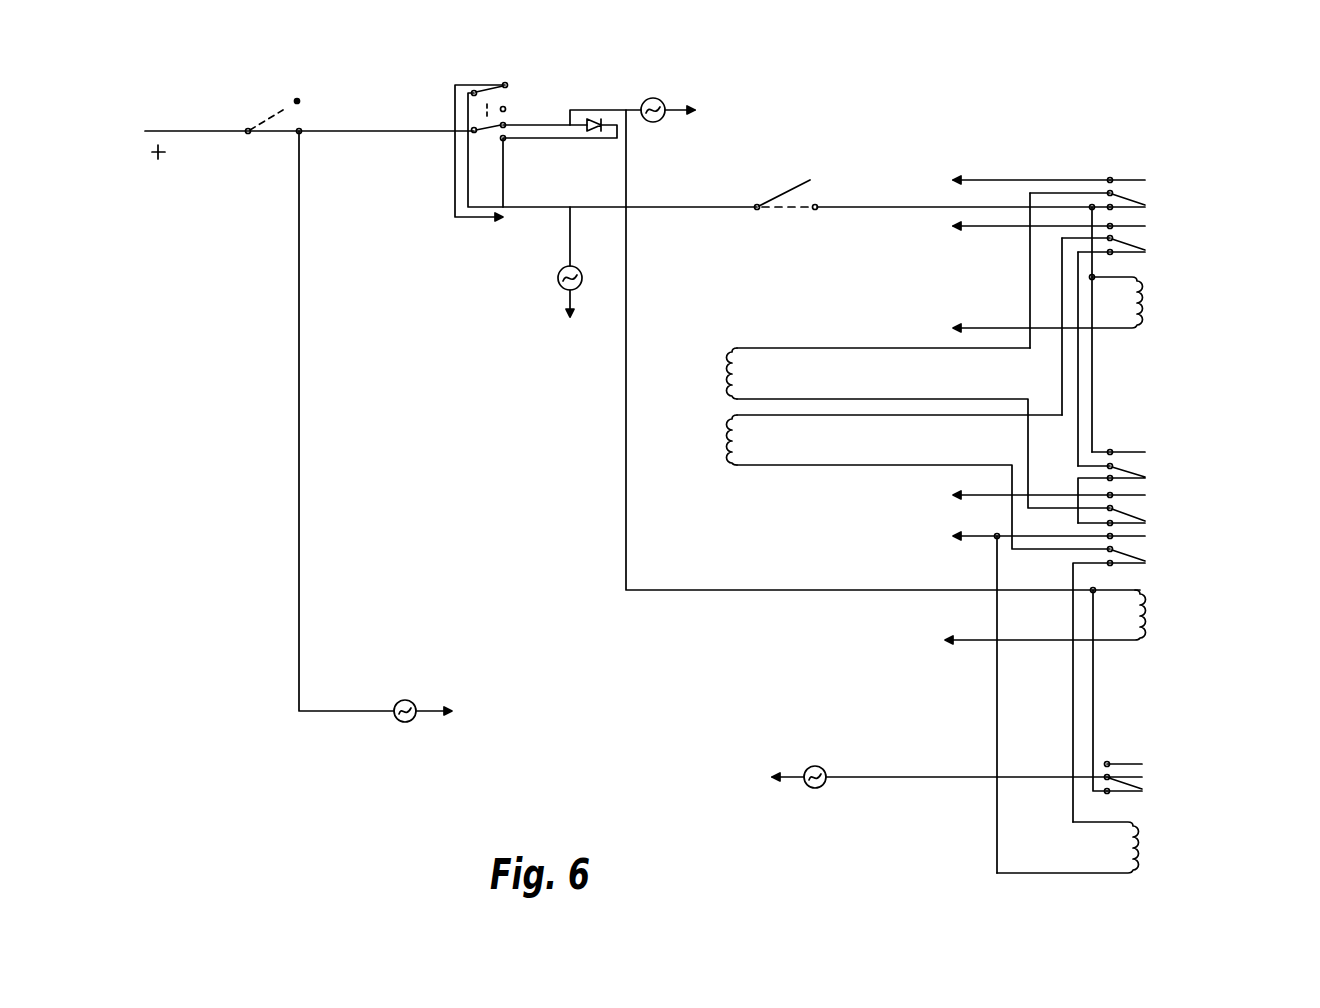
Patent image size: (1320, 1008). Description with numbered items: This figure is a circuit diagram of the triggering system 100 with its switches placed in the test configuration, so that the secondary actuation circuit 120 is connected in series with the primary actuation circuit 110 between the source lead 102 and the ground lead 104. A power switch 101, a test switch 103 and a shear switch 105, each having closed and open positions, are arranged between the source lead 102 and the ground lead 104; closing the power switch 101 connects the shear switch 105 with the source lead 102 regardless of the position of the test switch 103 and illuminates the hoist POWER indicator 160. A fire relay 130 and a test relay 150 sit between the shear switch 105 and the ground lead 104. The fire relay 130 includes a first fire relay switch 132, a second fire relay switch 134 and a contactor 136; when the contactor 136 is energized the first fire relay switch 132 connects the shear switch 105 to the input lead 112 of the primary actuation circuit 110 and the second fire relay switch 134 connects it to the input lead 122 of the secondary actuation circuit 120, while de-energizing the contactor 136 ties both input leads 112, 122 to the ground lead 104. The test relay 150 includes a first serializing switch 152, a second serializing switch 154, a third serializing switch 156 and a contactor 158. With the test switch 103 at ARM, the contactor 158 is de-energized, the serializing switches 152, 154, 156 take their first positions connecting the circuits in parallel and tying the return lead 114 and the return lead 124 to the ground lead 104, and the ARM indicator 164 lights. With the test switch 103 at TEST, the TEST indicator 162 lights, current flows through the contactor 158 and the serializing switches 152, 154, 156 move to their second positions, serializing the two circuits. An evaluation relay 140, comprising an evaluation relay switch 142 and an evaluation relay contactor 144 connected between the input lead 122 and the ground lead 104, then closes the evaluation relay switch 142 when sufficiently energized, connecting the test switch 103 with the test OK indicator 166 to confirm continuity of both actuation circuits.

The triggering system 100 is at (1181, 74).
The power switch 101 is at (270, 110).
The source lead 102 is at (190, 131).
The test switch 103 is at (492, 189).
The ground lead 104 is at (683, 112).
The shear switch 105 is at (798, 185).
The primary actuation circuit 110 is at (733, 352).
The input lead 112 is at (834, 346).
The return lead 114 is at (870, 398).
The secondary actuation circuit 120 is at (733, 470).
The input lead 122 is at (830, 417).
The return lead 124 is at (828, 467).
The fire relay 130 is at (1105, 316).
The first fire relay switch 132 is at (1137, 200).
The second fire relay switch 134 is at (1140, 247).
The contactor 136 is at (1143, 300).
The evaluation relay 140 is at (1036, 802).
The evaluation relay switch 142 is at (1134, 794).
The evaluation relay contactor 144 is at (1136, 849).
The test relay 150 is at (1109, 633).
The first serializing switch 152 is at (1140, 472).
The second serializing switch 154 is at (1140, 513).
The third serializing switch 156 is at (1137, 561).
The contactor 158 is at (1143, 612).
The POWER indicator 160 is at (398, 702).
The TEST indicator 162 is at (655, 122).
The ARM indicator 164 is at (563, 268).
The test OK indicator 166 is at (820, 767).